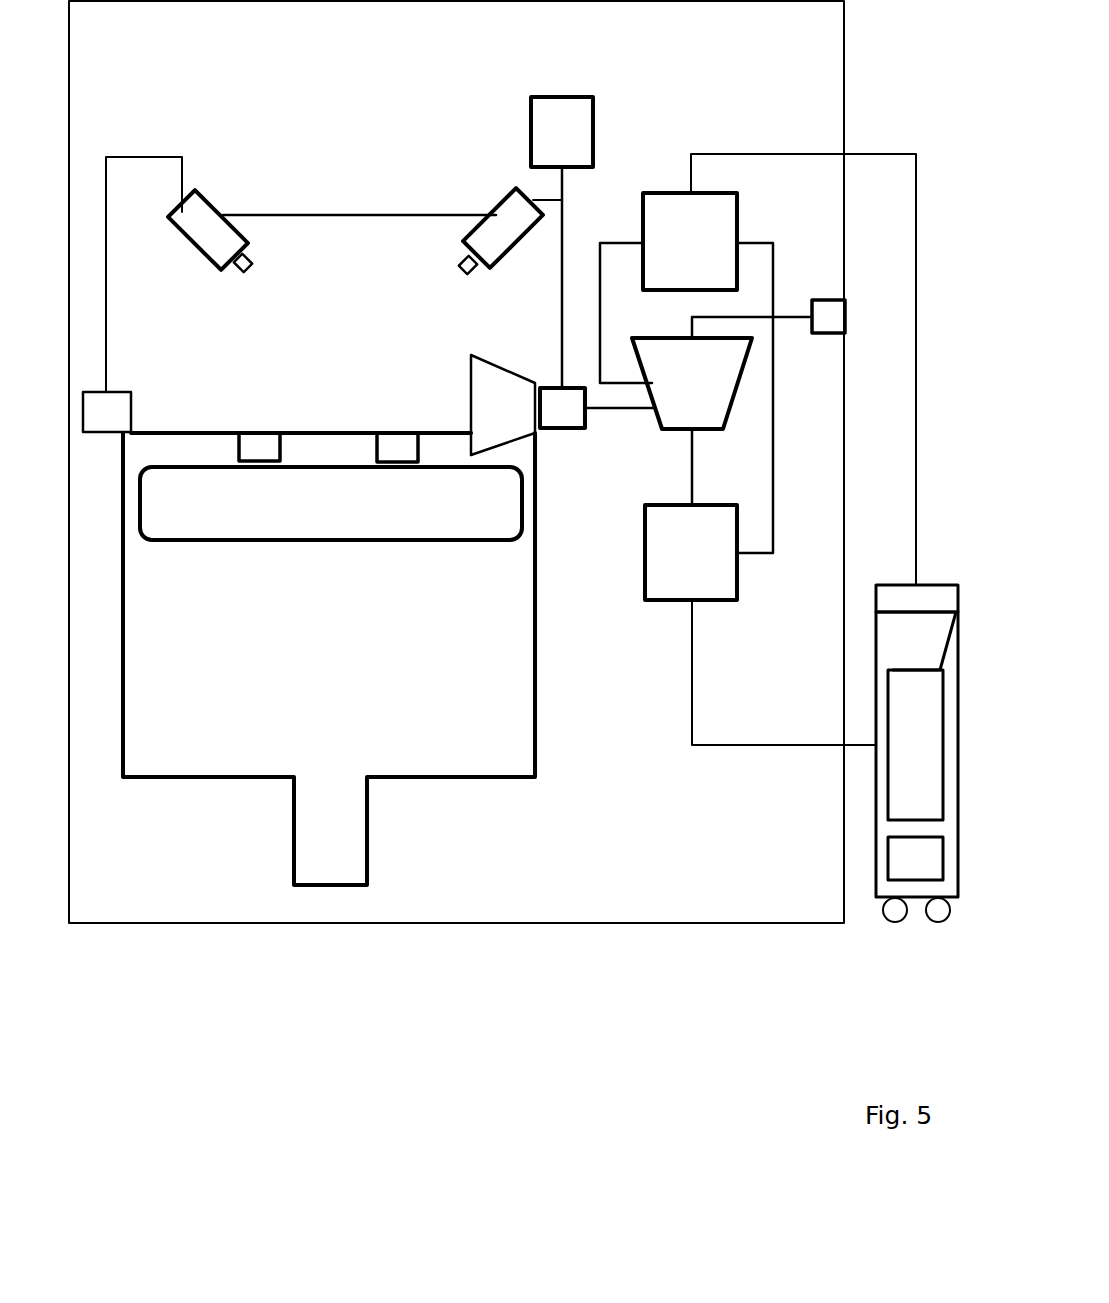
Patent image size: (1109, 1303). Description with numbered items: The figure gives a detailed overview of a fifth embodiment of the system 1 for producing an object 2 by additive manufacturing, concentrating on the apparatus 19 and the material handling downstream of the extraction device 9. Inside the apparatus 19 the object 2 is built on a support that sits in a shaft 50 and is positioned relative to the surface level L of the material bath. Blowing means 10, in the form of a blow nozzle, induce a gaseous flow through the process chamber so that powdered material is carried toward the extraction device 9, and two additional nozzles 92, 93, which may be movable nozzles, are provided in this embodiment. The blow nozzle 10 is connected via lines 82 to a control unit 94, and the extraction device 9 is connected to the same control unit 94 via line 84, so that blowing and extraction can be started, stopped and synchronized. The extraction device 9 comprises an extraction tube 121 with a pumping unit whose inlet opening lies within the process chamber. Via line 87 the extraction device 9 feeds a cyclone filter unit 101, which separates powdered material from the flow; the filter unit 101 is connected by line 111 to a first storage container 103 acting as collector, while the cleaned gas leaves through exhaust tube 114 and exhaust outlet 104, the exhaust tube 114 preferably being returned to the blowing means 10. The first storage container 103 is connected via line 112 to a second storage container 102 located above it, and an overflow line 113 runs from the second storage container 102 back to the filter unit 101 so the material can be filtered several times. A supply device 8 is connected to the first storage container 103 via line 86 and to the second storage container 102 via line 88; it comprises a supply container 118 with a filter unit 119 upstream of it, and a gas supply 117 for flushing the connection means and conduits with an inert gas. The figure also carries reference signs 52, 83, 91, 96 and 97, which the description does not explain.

The system 1 is at (352, 1027).
The object 2 is at (263, 448).
The supply device 8 is at (843, 960).
The extraction device 9 is at (565, 413).
The blowing means 10 is at (100, 420).
The apparatus 19 is at (179, 943).
The shaft 50 is at (345, 800).
The build platform 52 is at (332, 483).
The lines 82 is at (337, 213).
The connection line 83 is at (541, 199).
The line 84 is at (562, 288).
The line 86 is at (748, 748).
The line 87 is at (616, 410).
The line 88 is at (877, 153).
The processing device 91 is at (580, 690).
The additional nozzle 92 is at (205, 215).
The additional nozzle 93 is at (503, 218).
The control unit 94 is at (558, 115).
The first nozzle 96 is at (245, 262).
The second nozzle 97 is at (470, 255).
The filter unit 101 is at (672, 402).
The second storage container 102 is at (690, 207).
The first storage container 103 is at (658, 545).
The exhaust outlet 104 is at (828, 312).
The line 111 is at (693, 453).
The line 112 is at (775, 470).
The overflow line 113 is at (613, 240).
The exhaust tube 114 is at (790, 316).
The gas supply 117 is at (917, 858).
The supply container 118 is at (927, 753).
The filter unit 119 is at (928, 632).
The extraction tube 121 is at (490, 405).
The surface level L is at (152, 432).